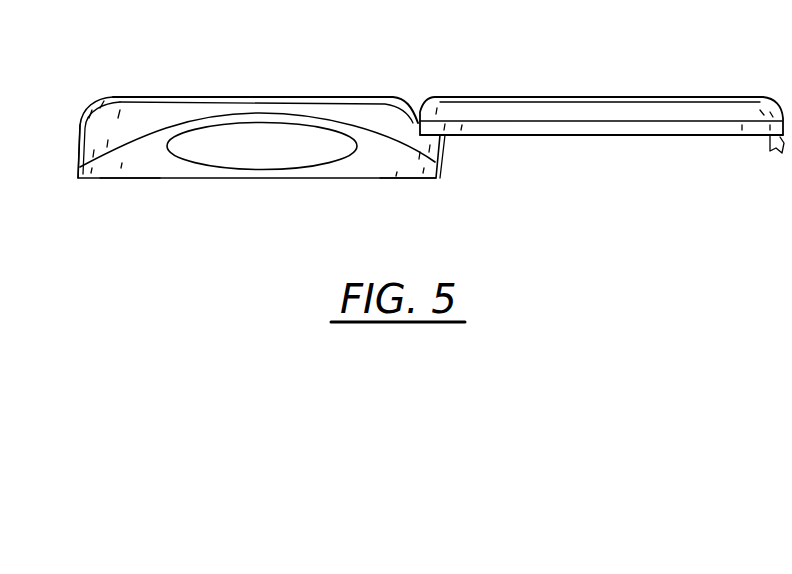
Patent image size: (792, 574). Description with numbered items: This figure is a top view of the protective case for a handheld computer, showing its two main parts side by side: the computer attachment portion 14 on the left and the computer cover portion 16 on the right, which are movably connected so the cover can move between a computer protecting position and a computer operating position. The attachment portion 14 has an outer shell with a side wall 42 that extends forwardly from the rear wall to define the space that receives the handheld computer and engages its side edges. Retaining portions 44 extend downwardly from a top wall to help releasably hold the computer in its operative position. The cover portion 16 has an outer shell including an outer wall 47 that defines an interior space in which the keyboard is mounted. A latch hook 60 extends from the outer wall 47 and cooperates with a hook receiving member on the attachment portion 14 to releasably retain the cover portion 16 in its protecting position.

The computer attachment portion 14 is at (323, 96).
The computer cover portion 16 is at (580, 96).
The side wall 42 is at (80, 133).
The retaining portion 44 is at (120, 179).
The outer wall 47 is at (635, 136).
The latch hook 60 is at (777, 152).